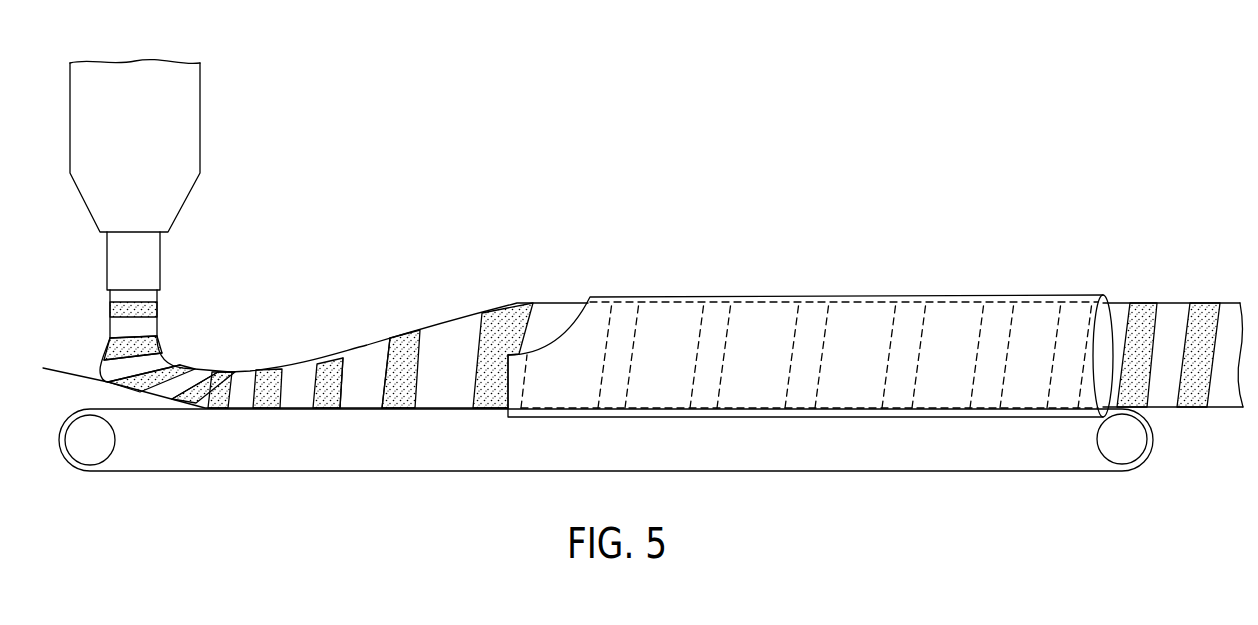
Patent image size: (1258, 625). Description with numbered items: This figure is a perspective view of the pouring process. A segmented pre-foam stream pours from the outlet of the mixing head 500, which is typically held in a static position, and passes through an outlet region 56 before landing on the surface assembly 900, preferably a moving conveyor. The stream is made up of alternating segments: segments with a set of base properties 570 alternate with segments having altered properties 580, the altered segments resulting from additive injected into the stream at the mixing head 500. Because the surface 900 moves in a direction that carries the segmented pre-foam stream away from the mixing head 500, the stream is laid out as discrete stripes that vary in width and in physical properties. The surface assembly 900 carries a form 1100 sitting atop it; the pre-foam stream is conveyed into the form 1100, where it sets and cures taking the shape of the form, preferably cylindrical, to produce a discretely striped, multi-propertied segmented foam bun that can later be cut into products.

The mixing head 500 is at (208, 105).
The extrusion nozzle 56 is at (158, 311).
The segments having altered properties 580 is at (267, 380).
The set of base properties 570 is at (358, 370).
The form 1100 is at (997, 292).
The surface assembly 900 is at (937, 470).